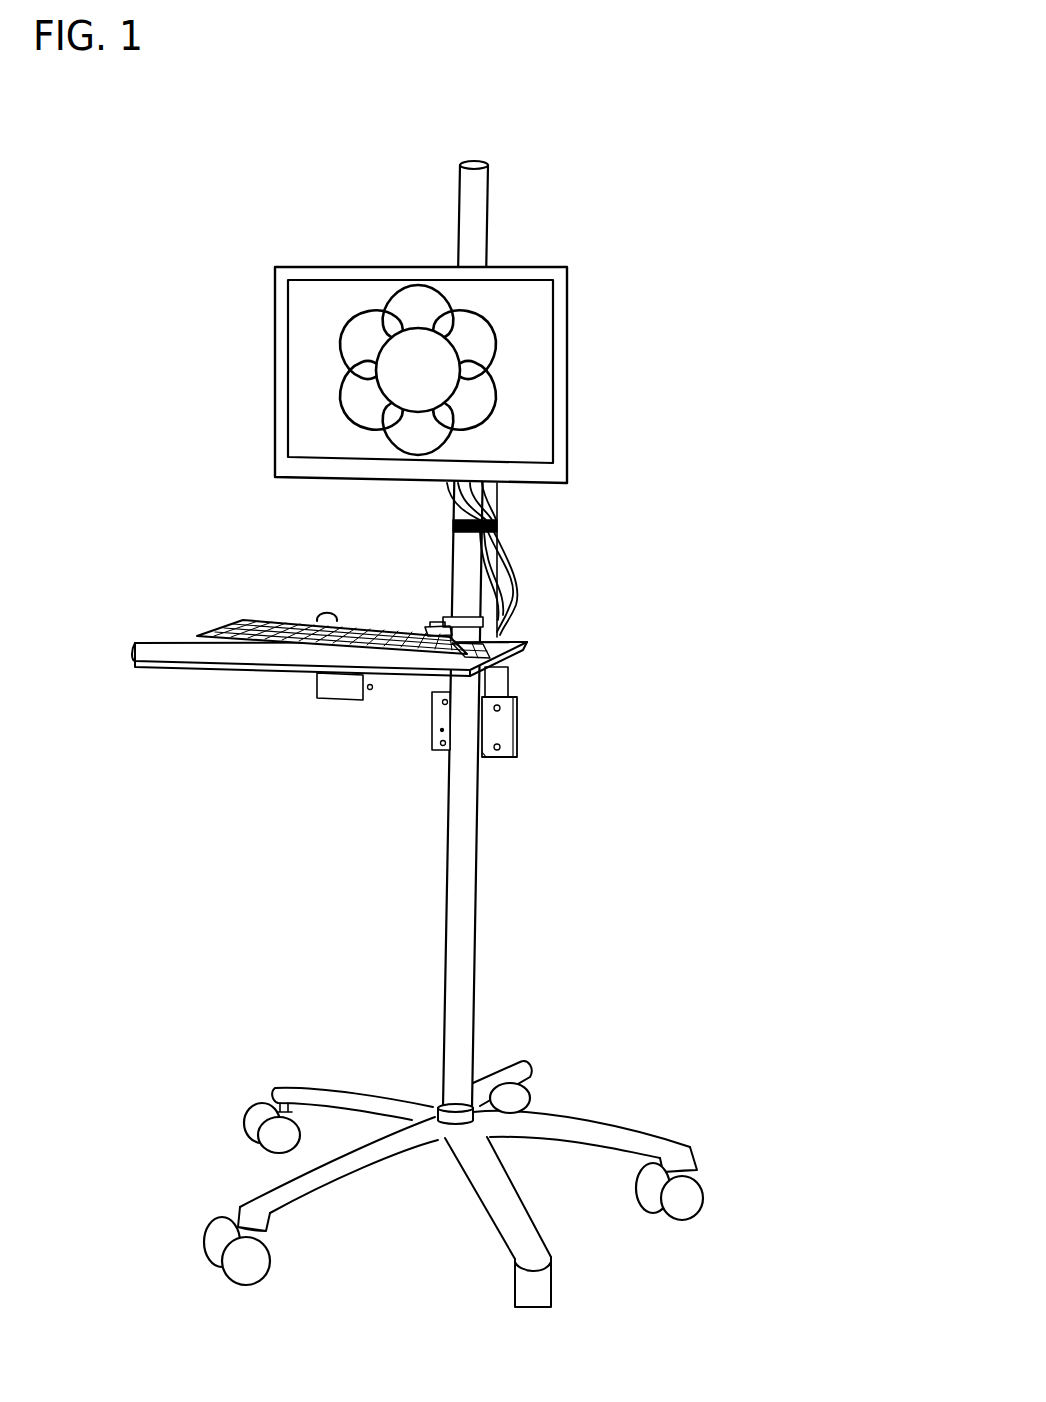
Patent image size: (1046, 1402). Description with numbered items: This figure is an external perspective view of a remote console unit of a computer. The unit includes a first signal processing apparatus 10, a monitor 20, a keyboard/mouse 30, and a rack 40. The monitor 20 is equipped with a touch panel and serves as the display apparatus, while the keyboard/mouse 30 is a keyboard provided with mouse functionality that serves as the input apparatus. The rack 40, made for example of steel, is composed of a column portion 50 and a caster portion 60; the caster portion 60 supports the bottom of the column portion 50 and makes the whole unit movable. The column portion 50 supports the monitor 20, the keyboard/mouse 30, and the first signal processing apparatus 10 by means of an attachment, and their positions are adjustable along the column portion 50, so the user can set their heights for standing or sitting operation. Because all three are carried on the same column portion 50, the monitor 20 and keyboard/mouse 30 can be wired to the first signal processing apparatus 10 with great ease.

The first signal processing apparatus 10 is at (517, 723).
The monitor 20 is at (565, 362).
The keyboard/mouse 30 is at (517, 638).
The rack 40 is at (560, 734).
The column portion 50 is at (477, 880).
The caster portion 60 is at (608, 1123).